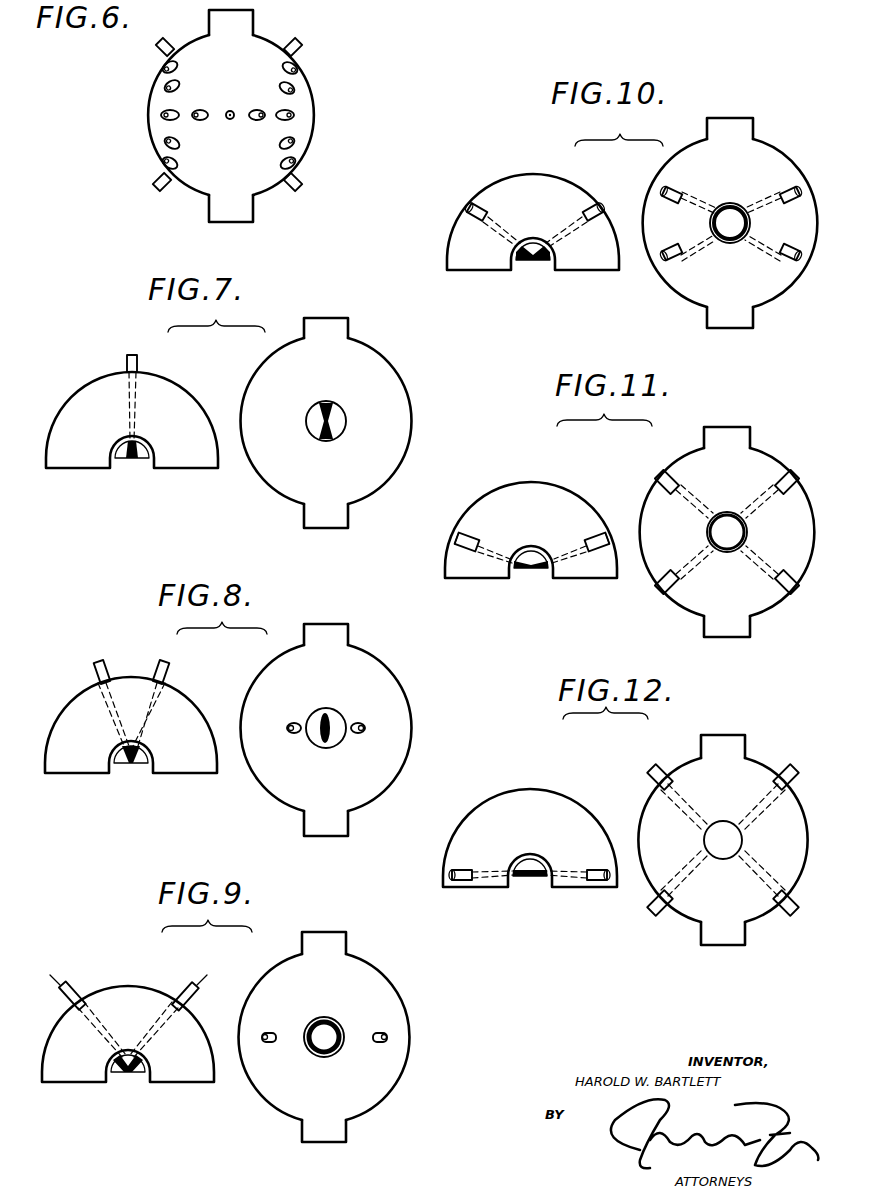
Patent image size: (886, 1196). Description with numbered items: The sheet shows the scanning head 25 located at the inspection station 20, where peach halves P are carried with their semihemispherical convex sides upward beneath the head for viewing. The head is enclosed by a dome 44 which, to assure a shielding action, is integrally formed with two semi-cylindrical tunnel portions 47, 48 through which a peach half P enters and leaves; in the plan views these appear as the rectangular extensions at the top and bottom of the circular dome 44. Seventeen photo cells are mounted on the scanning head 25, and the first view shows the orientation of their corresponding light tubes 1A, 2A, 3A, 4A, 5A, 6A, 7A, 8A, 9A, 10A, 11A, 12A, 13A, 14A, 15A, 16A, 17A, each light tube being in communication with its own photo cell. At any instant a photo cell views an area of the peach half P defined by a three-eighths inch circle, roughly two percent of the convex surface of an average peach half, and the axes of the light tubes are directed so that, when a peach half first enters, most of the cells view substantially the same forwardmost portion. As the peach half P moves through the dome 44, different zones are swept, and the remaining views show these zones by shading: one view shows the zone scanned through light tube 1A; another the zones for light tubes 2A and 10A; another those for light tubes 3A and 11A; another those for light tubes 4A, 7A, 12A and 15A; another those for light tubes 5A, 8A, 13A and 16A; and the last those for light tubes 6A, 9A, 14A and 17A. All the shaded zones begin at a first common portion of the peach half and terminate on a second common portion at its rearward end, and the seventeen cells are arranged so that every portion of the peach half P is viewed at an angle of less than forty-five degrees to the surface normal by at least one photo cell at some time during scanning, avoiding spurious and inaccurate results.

In FIG. 6, the inspection station 20 is at (280, 117).
In FIG. 7, the inspection station 20 is at (253, 422).
In FIG. 8, the inspection station 20 is at (238, 728).
In FIG. 9, the inspection station 20 is at (244, 1023).
In FIG. 10, the inspection station 20 is at (632, 205).
In FIG. 11, the inspection station 20 is at (632, 521).
In FIG. 12, the inspection station 20 is at (622, 836).
In FIG. 6, the scanning head 25 is at (231, 120).
In FIG. 7, the scanning head 25 is at (253, 421).
In FIG. 8, the scanning head 25 is at (238, 731).
In FIG. 9, the scanning head 25 is at (244, 1026).
In FIG. 10, the scanning head 25 is at (632, 237).
In FIG. 11, the scanning head 25 is at (629, 550).
In FIG. 12, the scanning head 25 is at (618, 865).
In FIG. 6, the dome 44 is at (274, 50).
In FIG. 7, the dome 44 is at (190, 403).
In FIG. 8, the dome 44 is at (80, 701).
In FIG. 9, the dome 44 is at (65, 1022).
In FIG. 10, the dome 44 is at (515, 180).
In FIG. 11, the dome 44 is at (525, 489).
In FIG. 12, the dome 44 is at (473, 816).
In FIG. 6, the semi-cylindrical tunnel portion 47 is at (240, 212).
In FIG. 7, the semi-cylindrical tunnel portion 47 is at (337, 518).
In FIG. 8, the semi-cylindrical tunnel portion 47 is at (337, 827).
In FIG. 9, the semi-cylindrical tunnel portion 47 is at (335, 1132).
In FIG. 10, the semi-cylindrical tunnel portion 47 is at (715, 320).
In FIG. 11, the semi-cylindrical tunnel portion 47 is at (712, 627).
In FIG. 12, the semi-cylindrical tunnel portion 47 is at (723, 935).
In FIG. 6, the semi-cylindrical tunnel portion 48 is at (240, 18).
In FIG. 7, the semi-cylindrical tunnel portion 48 is at (337, 328).
In FIG. 8, the semi-cylindrical tunnel portion 48 is at (337, 635).
In FIG. 9, the semi-cylindrical tunnel portion 48 is at (333, 938).
In FIG. 10, the semi-cylindrical tunnel portion 48 is at (745, 125).
In FIG. 11, the semi-cylindrical tunnel portion 48 is at (738, 437).
In FIG. 12, the semi-cylindrical tunnel portion 48 is at (733, 742).
In FIG. 7, the peach half P is at (142, 460).
In FIG. 8, the peach half P is at (118, 765).
In FIG. 9, the peach half P is at (135, 1073).
In FIG. 10, the peach half P is at (547, 265).
In FIG. 11, the peach half P is at (517, 569).
In FIG. 12, the peach half P is at (535, 878).
In FIG. 6, the light tube 1A is at (232, 112).
In FIG. 7, the light tube 1A is at (139, 363).
In FIG. 6, the light tube 2A is at (256, 120).
In FIG. 8, the light tube 2A is at (165, 676).
In FIG. 6, the light tube 3A is at (295, 115).
In FIG. 9, the light tube 3A is at (177, 1000).
In FIG. 6, the light tube 4A is at (296, 143).
In FIG. 10, the light tube 4A is at (592, 207).
In FIG. 6, the light tube 5A is at (297, 161).
In FIG. 11, the light tube 5A is at (594, 549).
In FIG. 6, the light tube 6A is at (300, 181).
In FIG. 12, the light tube 6A is at (594, 880).
In FIG. 6, the light tube 7A is at (295, 90).
In FIG. 10, the light tube 7A is at (795, 190).
In FIG. 6, the light tube 8A is at (298, 78).
In FIG. 11, the light tube 8A is at (789, 474).
In FIG. 6, the light tube 9A is at (300, 50).
In FIG. 12, the light tube 9A is at (785, 770).
In FIG. 6, the light tube 10A is at (201, 120).
In FIG. 8, the light tube 10A is at (97, 673).
In FIG. 6, the light tube 11A is at (162, 117).
In FIG. 9, the light tube 11A is at (62, 997).
In FIG. 6, the light tube 12A is at (163, 146).
In FIG. 10, the light tube 12A is at (467, 214).
In FIG. 6, the light tube 13A is at (160, 165).
In FIG. 11, the light tube 13A is at (465, 549).
In FIG. 6, the light tube 14A is at (156, 186).
In FIG. 12, the light tube 14A is at (465, 880).
In FIG. 6, the light tube 15A is at (163, 88).
In FIG. 10, the light tube 15A is at (665, 190).
In FIG. 6, the light tube 16A is at (162, 70).
In FIG. 11, the light tube 16A is at (661, 474).
In FIG. 6, the light tube 17A is at (168, 42).
In FIG. 12, the light tube 17A is at (658, 770).